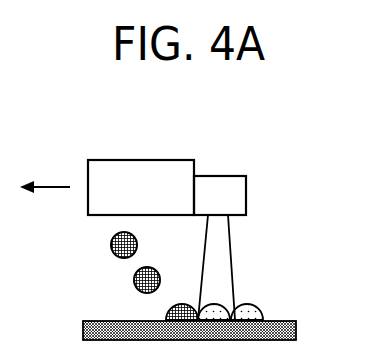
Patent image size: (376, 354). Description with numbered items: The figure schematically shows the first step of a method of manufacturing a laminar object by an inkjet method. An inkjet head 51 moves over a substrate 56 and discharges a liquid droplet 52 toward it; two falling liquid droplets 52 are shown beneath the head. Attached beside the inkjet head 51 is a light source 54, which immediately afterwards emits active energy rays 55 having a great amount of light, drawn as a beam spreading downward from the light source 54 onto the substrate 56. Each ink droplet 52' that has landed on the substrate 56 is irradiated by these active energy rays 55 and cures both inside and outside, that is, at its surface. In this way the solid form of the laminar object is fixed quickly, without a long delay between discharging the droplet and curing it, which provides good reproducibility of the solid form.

The inkjet head 51 is at (172, 160).
The light source 54 is at (229, 175).
The active energy rays 55 is at (233, 251).
The liquid droplet 52 is at (121, 269).
The ink droplet that has landed 52' is at (248, 298).
The substrate 56 is at (297, 327).